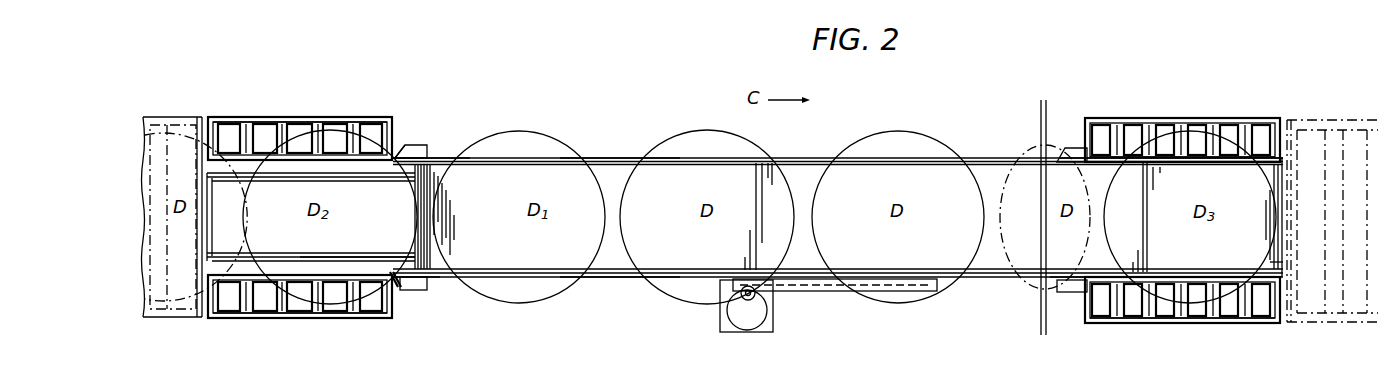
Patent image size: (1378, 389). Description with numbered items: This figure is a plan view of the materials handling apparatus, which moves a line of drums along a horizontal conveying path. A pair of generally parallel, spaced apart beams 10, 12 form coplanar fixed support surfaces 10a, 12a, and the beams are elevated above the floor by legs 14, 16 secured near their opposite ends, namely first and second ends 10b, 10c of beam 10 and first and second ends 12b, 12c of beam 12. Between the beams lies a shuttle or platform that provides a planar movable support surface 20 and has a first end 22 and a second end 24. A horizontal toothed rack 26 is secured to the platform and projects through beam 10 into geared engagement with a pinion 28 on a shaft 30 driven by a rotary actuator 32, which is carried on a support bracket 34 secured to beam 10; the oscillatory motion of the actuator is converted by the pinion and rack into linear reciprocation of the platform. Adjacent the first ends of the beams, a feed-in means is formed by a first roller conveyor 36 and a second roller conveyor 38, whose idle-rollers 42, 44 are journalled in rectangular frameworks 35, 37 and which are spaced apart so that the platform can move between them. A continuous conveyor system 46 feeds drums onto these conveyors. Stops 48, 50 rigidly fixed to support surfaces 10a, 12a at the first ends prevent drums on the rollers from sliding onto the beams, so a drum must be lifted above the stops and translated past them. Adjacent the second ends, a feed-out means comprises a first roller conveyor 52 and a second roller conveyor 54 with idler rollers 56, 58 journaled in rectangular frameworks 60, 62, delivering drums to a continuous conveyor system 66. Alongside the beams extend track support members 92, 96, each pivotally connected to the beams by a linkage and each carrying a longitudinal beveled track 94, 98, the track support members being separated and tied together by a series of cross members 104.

The beam 10 is at (992, 278).
The fixed support surface 10a is at (623, 278).
The first end of beam 10b is at (407, 280).
The second end of beam 10c is at (1078, 290).
The beam 12 is at (980, 158).
The fixed support surface 12a is at (615, 157).
The first end of beam 12b is at (422, 150).
The second end of beam 12c is at (1078, 150).
The legs 14 is at (427, 290).
The legs 16 is at (408, 150).
The movable support surface 20 is at (624, 260).
The first end of platform 22 is at (440, 170).
The second end of platform 24 is at (1272, 268).
The toothed rack 26 is at (888, 292).
The pinion 28 is at (741, 297).
The shaft 30 is at (756, 294).
The rotary actuator 32 is at (743, 320).
The support bracket 34 is at (770, 333).
The rectangular framework 35 is at (268, 322).
The first roller conveyor 36 is at (311, 332).
The rectangular framework 37 is at (363, 117).
The second roller conveyor 38 is at (268, 108).
The idle-rollers 42 is at (227, 310).
The idle-rollers 44 is at (228, 130).
The continuous conveyor system 46 is at (157, 108).
The stop 48 is at (399, 290).
The stop 50 is at (397, 157).
The first roller conveyor 52 is at (1208, 350).
The second roller conveyor 54 is at (1209, 108).
The idler rollers 56 is at (1142, 310).
The idler rollers 58 is at (1148, 132).
The rectangular framework 60 is at (1185, 320).
The rectangular framework 62 is at (1260, 118).
The continuous conveyor system 66 is at (1345, 108).
The track support member 92 is at (317, 250).
The track 94 is at (357, 263).
The track support member 96 is at (377, 183).
The track 98 is at (318, 175).
The cross members 104 is at (213, 220).